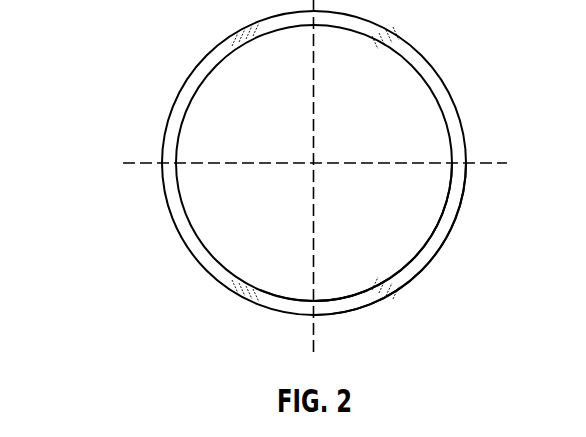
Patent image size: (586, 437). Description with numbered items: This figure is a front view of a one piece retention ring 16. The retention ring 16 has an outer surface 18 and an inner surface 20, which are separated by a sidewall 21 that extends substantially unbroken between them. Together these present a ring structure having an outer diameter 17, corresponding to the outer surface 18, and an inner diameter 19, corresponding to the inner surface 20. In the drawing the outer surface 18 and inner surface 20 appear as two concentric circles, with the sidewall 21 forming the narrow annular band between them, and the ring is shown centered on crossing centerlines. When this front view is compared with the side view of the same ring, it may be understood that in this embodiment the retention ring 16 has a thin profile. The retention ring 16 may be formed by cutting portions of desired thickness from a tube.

The retention ring 16 is at (99, 103).
The outer diameter 17 is at (345, 298).
The outer surface 18 is at (212, 53).
The inner diameter 19 is at (466, 96).
The inner surface 20 is at (193, 225).
The sidewall 21 is at (440, 227).